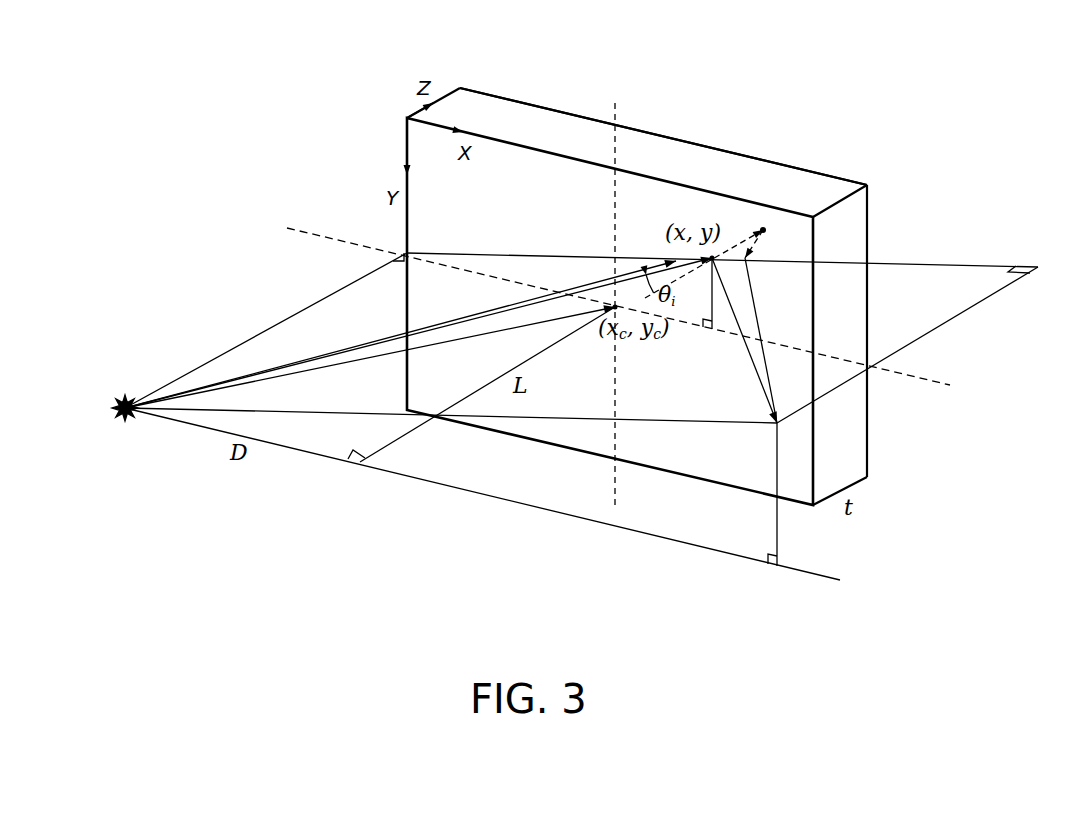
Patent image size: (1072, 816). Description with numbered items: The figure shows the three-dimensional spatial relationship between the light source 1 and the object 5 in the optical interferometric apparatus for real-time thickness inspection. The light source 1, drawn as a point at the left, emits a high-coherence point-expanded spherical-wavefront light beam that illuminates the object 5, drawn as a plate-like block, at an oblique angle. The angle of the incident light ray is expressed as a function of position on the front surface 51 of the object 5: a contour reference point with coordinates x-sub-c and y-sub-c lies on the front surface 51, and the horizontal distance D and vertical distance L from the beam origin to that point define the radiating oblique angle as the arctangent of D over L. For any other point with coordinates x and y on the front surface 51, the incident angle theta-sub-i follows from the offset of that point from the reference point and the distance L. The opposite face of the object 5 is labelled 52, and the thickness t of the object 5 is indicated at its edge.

The light source 1 is at (121, 400).
The object 5 is at (649, 108).
The front surface 51 is at (523, 146).
The rear surface 52 is at (783, 164).